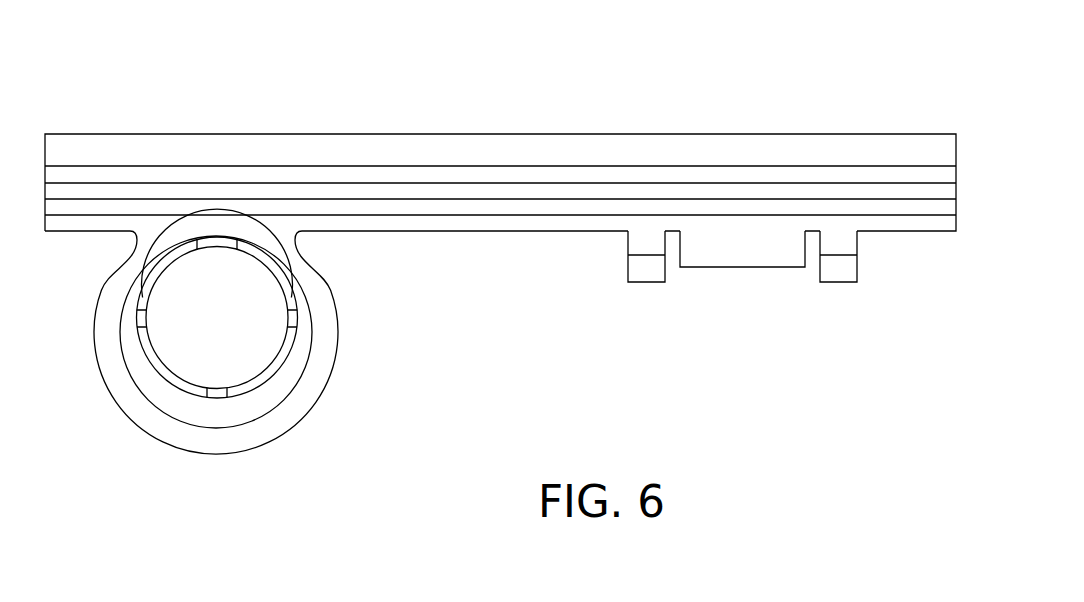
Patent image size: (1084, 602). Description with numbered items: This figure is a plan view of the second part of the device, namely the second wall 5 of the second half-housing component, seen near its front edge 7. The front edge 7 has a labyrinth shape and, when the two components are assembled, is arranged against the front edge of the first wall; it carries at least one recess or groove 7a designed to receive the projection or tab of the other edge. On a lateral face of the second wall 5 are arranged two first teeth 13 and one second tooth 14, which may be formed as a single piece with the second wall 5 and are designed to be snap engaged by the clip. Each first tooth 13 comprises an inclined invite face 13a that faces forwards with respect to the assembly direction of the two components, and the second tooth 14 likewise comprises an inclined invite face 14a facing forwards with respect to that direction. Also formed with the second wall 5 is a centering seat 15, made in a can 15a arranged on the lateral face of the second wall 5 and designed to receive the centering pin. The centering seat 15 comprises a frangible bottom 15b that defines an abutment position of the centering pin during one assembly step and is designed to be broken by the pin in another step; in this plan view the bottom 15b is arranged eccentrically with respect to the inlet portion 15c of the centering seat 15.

The second wall 5 is at (875, 132).
The front edge 7 is at (682, 155).
The recess or groove 7a is at (937, 193).
The first tooth 13 is at (625, 292).
The inclined invite face 13a is at (652, 272).
The second tooth 14 is at (763, 279).
The inclined invite face 14a is at (755, 243).
The centering seat 15 is at (232, 393).
The can 15a is at (307, 416).
The frangible bottom 15b is at (173, 350).
The inlet portion 15c is at (222, 428).